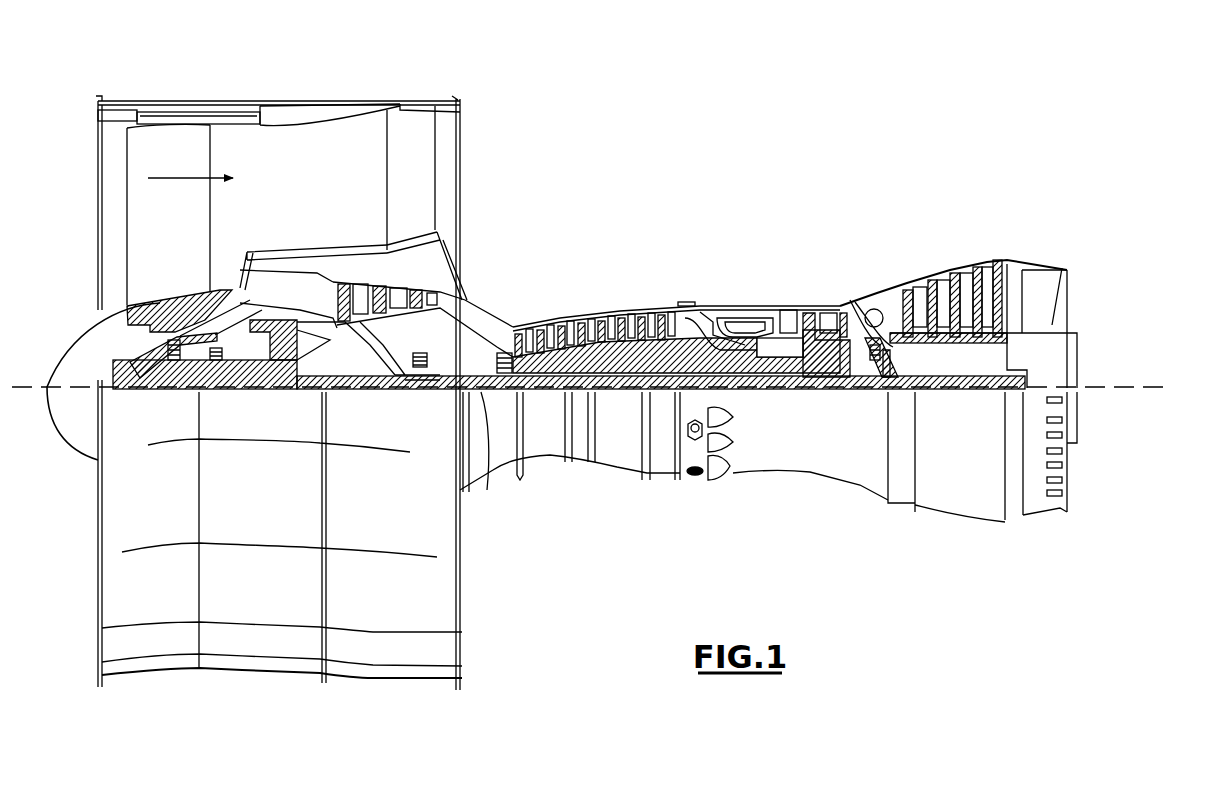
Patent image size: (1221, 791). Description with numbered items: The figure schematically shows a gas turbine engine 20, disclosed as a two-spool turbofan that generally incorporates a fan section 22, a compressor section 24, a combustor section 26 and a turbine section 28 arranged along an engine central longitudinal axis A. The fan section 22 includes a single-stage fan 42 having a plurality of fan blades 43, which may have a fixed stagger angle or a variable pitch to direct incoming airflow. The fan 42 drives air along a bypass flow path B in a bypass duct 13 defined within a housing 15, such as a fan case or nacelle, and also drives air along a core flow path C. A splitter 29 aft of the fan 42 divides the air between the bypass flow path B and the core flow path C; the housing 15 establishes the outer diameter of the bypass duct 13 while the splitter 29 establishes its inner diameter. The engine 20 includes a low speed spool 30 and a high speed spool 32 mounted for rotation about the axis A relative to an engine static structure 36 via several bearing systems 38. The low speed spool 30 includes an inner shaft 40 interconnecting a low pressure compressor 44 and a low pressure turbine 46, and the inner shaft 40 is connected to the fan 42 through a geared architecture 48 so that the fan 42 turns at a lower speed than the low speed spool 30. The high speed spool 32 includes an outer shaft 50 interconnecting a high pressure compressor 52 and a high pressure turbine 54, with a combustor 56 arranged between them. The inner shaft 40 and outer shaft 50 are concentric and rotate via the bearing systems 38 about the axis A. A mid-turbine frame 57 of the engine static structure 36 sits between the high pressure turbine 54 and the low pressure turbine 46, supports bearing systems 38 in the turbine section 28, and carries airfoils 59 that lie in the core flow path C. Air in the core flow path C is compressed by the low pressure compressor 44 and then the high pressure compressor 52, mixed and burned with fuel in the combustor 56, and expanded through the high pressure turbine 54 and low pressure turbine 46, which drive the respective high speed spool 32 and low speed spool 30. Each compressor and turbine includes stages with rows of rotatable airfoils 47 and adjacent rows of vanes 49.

The bypass duct 13 is at (337, 132).
The housing 15 is at (280, 107).
The gas turbine engine 20 is at (740, 156).
The fan section 22 is at (211, 96).
The compressor section 24 is at (511, 295).
The combustor section 26 is at (735, 285).
The turbine section 28 is at (908, 246).
The splitter 29 is at (248, 250).
The low speed spool 30 is at (620, 396).
The high speed spool 32 is at (658, 360).
The engine static structure 36 is at (660, 483).
The bearing systems 38 is at (418, 365).
The inner shaft 40 is at (480, 392).
The fan 42 is at (153, 233).
The fan blades 43 is at (198, 233).
The low pressure compressor 44 is at (440, 245).
The low pressure turbine 46 is at (950, 270).
The rotatable airfoils 47 is at (342, 286).
The geared architecture 48 is at (287, 372).
The vanes 49 is at (362, 287).
The outer shaft 50 is at (745, 386).
The high pressure compressor 52 is at (600, 318).
The high pressure turbine 54 is at (812, 312).
The combustor 56 is at (730, 328).
The mid-turbine frame 57 is at (869, 304).
The airfoils 59 is at (868, 325).
The engine central longitudinal axis A is at (1162, 387).
The bypass flow path B is at (182, 177).
The core flow path C is at (286, 284).